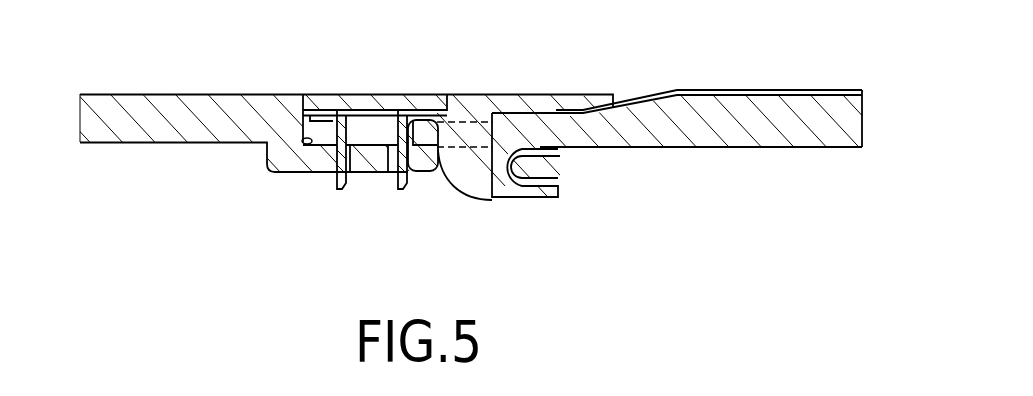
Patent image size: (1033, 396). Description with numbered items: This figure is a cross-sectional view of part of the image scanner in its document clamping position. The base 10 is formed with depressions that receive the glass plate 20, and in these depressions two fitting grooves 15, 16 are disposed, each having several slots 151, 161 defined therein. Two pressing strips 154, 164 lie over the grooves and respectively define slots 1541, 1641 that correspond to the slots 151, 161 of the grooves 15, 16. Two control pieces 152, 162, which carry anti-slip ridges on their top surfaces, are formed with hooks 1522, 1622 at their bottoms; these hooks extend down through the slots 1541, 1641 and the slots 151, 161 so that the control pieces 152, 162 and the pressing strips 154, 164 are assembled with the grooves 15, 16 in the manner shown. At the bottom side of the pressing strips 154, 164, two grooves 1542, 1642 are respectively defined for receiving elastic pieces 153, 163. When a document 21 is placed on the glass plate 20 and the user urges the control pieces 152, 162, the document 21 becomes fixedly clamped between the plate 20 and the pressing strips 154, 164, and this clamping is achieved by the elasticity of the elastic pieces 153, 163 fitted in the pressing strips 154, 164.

The base 10 is at (152, 112).
The glass plate 20 is at (848, 130).
The document 21 is at (745, 90).
The fitting groove 15 is at (248, 169).
The fitting groove 16 is at (305, 142).
The pressing strip 164 is at (455, 77).
The pressing strip 154 is at (547, 73).
The slot 1641 is at (355, 60).
The slot 1541 is at (352, 112).
The control piece 162 is at (384, 143).
The control piece 152 is at (384, 143).
The hook 1622 is at (344, 178).
The hook 1522 is at (346, 175).
The slot 161 is at (408, 216).
The slot 151 is at (362, 176).
The groove 1542 is at (556, 200).
The groove 1642 is at (507, 198).
The elastic piece 163 is at (595, 172).
The elastic piece 153 is at (545, 152).